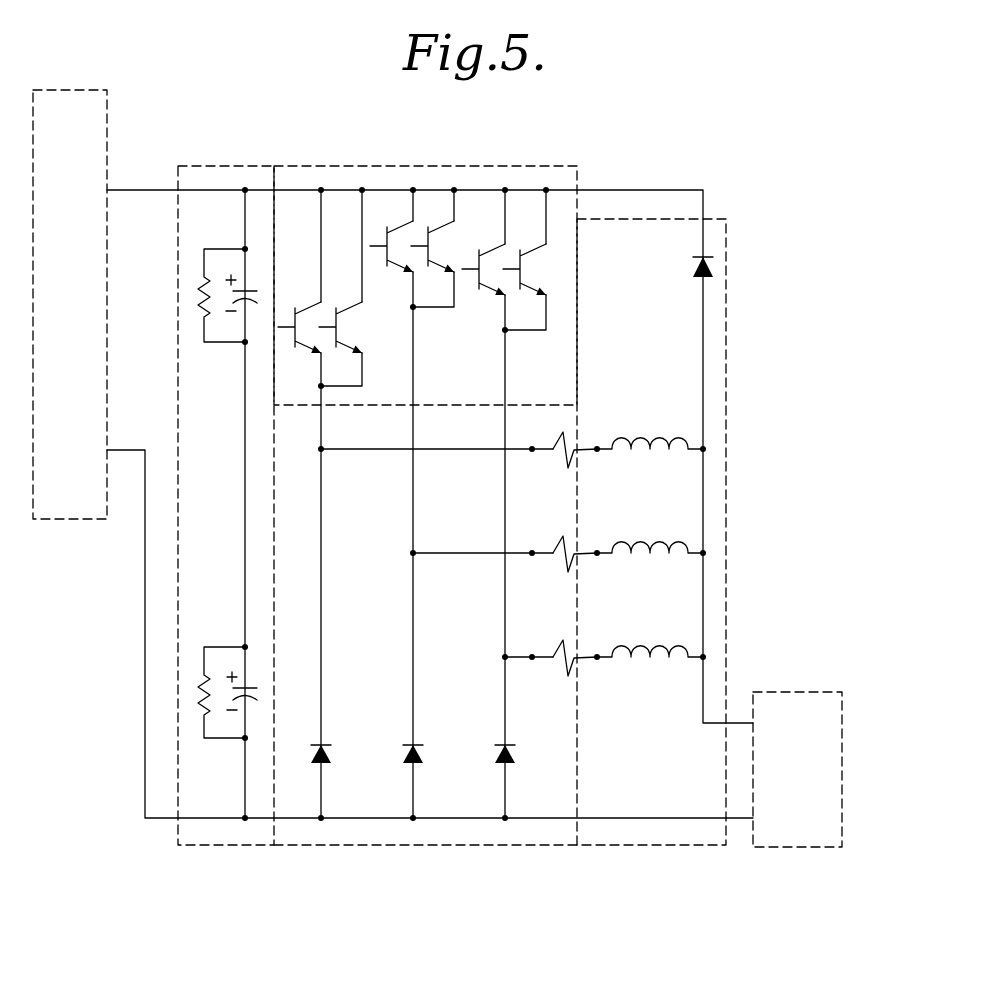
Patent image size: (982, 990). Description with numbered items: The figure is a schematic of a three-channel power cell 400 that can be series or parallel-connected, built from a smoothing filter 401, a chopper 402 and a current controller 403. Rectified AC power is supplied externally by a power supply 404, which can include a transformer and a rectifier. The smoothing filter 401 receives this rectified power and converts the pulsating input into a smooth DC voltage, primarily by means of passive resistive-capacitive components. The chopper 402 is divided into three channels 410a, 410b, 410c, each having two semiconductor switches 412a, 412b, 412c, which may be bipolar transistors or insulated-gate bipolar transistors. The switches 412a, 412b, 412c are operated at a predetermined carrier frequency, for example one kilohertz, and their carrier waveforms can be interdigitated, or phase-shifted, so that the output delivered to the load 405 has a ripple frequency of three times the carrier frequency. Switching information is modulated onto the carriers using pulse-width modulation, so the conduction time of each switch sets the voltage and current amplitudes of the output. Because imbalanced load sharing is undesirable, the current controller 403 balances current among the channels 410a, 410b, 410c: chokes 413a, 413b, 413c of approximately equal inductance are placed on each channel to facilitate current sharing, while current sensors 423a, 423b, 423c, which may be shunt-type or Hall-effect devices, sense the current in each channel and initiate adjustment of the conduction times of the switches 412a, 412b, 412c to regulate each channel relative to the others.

The three-channel power cell 400 is at (730, 135).
The smoothing filter 401 is at (215, 165).
The chopper 402 is at (578, 302).
The current controller 403 is at (724, 310).
The power supply 404 is at (47, 90).
The load 405 is at (807, 848).
The channel 410a is at (322, 708).
The channel 410b is at (415, 682).
The channel 410c is at (506, 715).
The semiconductor switch 412a is at (338, 310).
The semiconductor switch 412b is at (428, 227).
The semiconductor switch 412c is at (520, 252).
The choke 413a is at (650, 440).
The choke 413b is at (655, 544).
The choke 413c is at (655, 647).
The current sensor 423a is at (562, 458).
The current sensor 423b is at (562, 562).
The current sensor 423c is at (562, 666).